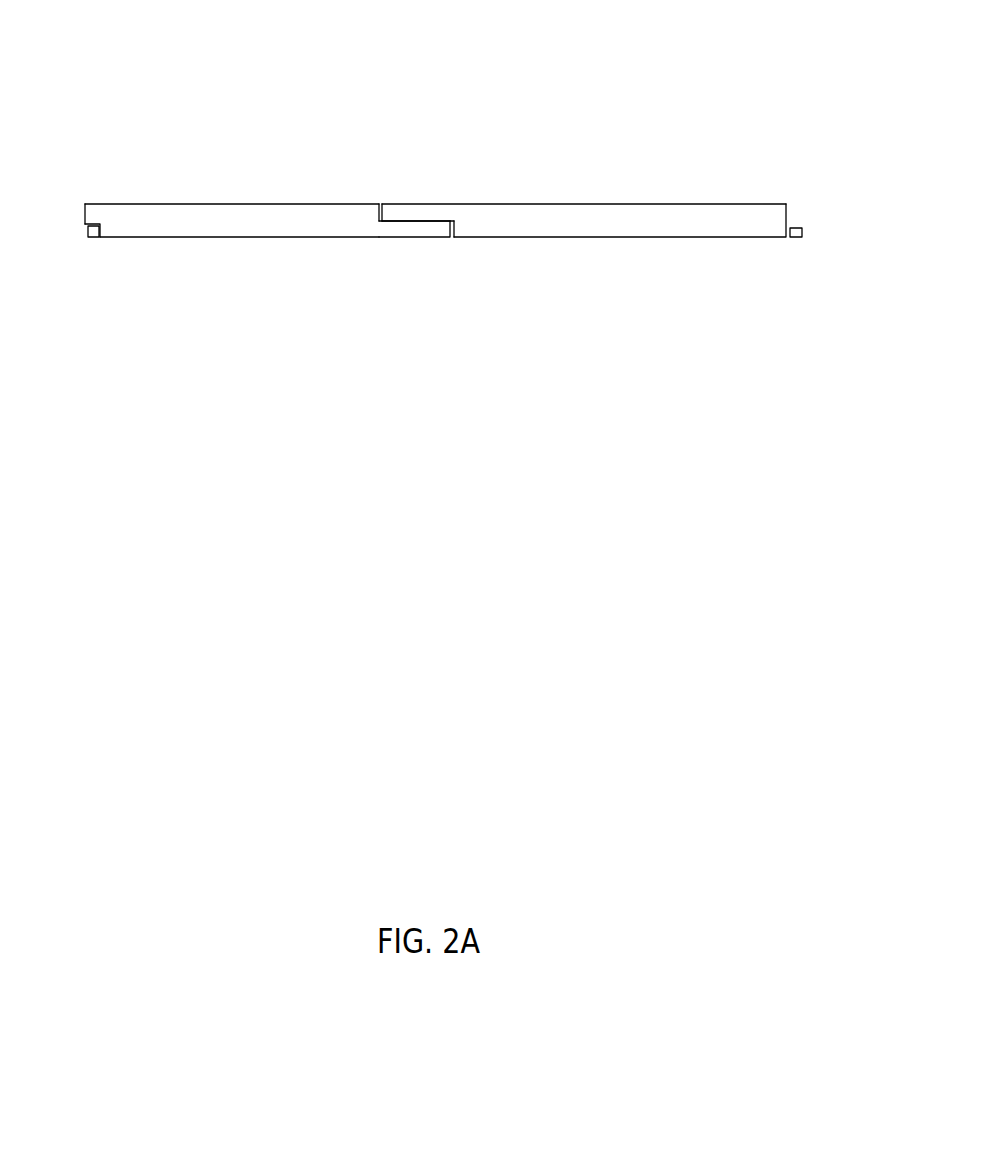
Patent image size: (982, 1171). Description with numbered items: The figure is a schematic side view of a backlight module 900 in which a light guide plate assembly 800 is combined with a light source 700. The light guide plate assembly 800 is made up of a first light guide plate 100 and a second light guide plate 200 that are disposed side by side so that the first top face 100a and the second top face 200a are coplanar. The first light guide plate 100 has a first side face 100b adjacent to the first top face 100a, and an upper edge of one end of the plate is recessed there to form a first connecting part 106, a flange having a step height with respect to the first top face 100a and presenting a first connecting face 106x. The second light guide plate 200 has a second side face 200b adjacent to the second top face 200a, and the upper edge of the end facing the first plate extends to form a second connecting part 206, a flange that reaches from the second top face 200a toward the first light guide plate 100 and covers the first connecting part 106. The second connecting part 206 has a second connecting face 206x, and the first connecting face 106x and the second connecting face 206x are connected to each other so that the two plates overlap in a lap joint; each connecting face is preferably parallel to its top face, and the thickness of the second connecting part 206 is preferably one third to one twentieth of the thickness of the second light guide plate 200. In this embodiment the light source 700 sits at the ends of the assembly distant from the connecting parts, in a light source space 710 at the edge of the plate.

The backlight module 900 is at (125, 67).
The light guide plate assembly 800 is at (493, 117).
The first light guide plate 100 is at (291, 220).
The first top face 100a is at (168, 205).
The first side face 100b is at (378, 212).
The first connecting part 106 is at (418, 230).
The first connecting face 106x is at (410, 222).
The second light guide plate 200 is at (543, 220).
The second top face 200a is at (622, 204).
The second side face 200b is at (457, 227).
The second connecting part 206 is at (425, 210).
The second connecting face 206x is at (442, 221).
The light source 700 is at (87, 230).
The light source space 710 is at (85, 226).